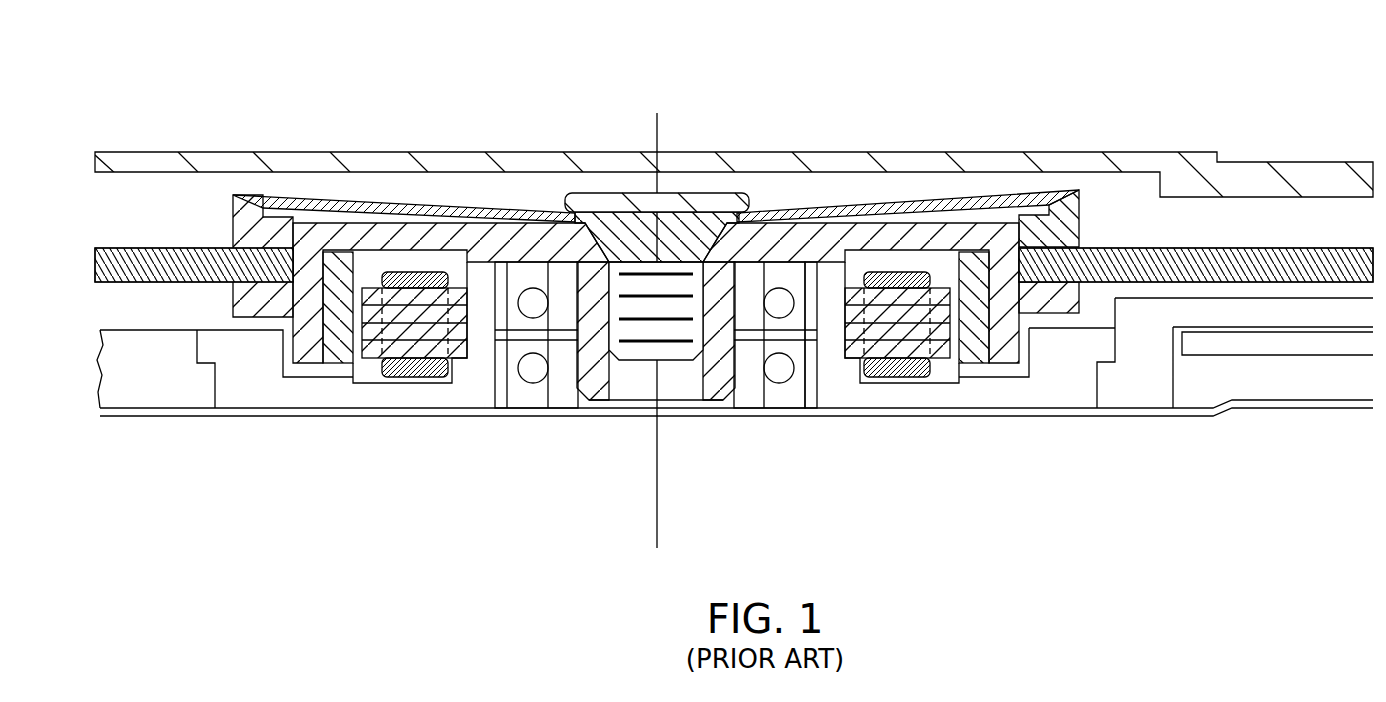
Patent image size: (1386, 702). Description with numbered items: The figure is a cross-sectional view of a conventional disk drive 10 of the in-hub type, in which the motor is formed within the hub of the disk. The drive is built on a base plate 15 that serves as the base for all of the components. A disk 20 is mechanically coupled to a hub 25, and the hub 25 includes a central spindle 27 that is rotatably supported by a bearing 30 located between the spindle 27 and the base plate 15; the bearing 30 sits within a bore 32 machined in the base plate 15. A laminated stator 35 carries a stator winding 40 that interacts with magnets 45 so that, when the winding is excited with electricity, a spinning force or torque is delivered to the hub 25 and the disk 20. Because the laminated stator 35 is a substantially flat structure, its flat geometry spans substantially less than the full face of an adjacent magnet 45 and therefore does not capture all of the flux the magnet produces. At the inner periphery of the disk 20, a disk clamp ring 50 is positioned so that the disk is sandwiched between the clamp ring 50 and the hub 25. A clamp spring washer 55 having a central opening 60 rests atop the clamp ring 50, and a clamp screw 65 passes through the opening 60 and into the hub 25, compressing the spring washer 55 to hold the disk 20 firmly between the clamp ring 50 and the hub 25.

The disk drive 10 is at (1238, 89).
The base plate 15 is at (252, 388).
The disk 20 is at (158, 273).
The hub 25 is at (897, 223).
The central spindle 27 is at (716, 363).
The bearing 30 is at (788, 393).
The bore 32 is at (820, 364).
The laminated stator 35 is at (415, 338).
The stator winding 40 is at (430, 378).
The magnets 45 is at (338, 345).
The disk clamp ring 50 is at (243, 230).
The clamp spring washer 55 is at (373, 200).
The central opening 60 is at (753, 217).
The clamp screw 65 is at (693, 193).